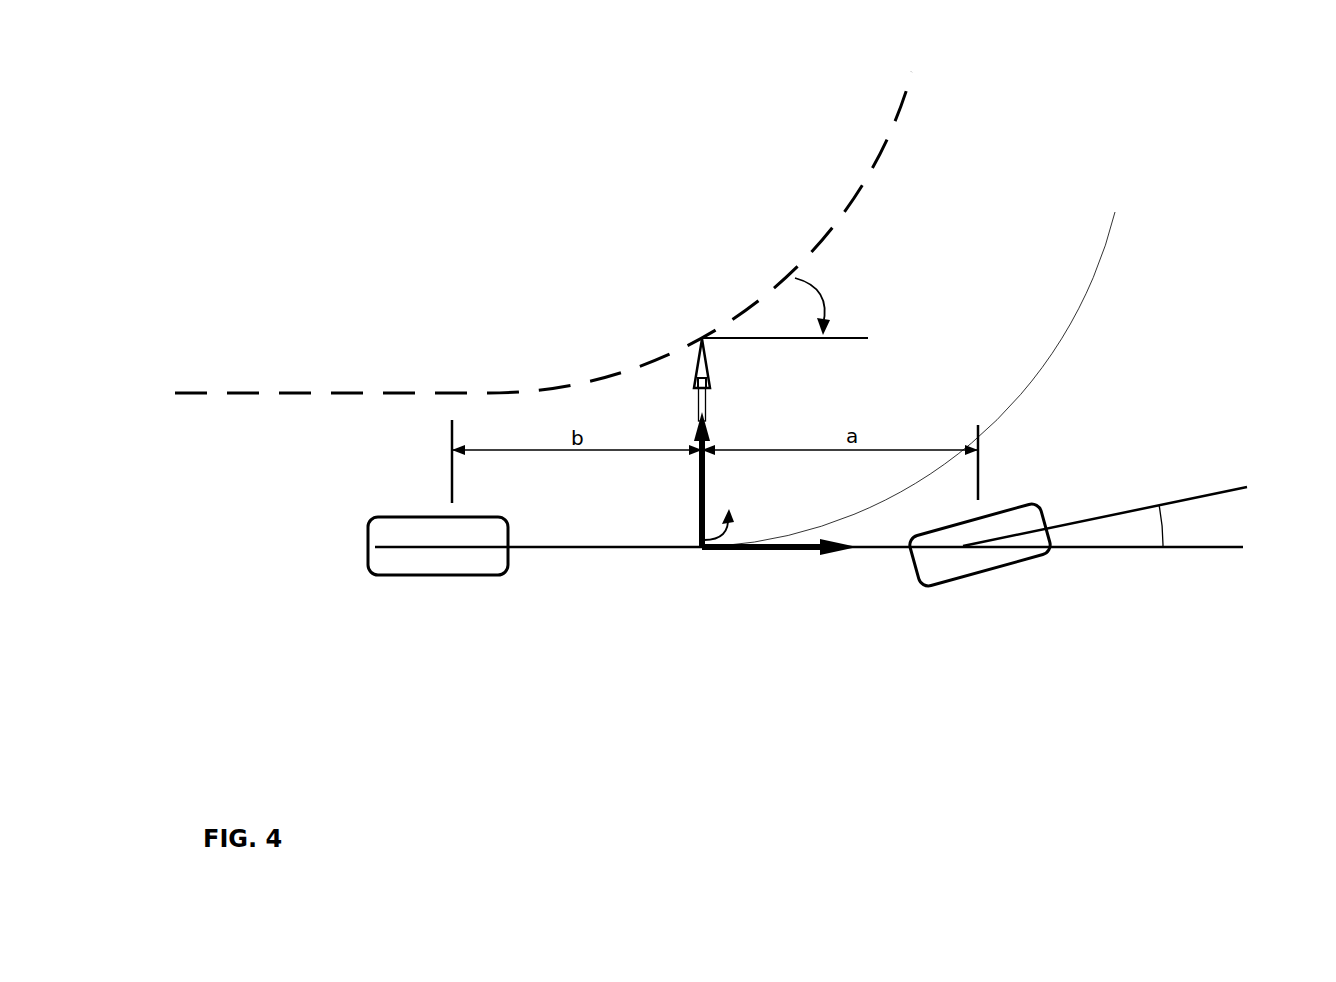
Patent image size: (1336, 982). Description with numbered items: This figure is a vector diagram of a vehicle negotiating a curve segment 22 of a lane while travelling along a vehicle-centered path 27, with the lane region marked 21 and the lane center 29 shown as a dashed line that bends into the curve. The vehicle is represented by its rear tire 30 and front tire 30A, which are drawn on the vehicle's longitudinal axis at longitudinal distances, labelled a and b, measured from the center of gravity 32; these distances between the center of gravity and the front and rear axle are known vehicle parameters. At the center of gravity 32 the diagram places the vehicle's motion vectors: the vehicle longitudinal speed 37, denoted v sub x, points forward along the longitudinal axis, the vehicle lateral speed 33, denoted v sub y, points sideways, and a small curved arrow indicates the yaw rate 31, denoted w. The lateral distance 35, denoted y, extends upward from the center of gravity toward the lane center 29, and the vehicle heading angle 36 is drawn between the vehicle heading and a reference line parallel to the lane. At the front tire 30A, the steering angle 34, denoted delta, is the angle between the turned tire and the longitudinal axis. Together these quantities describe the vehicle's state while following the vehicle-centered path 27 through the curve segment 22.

The first lane area 21 is at (274, 489).
The curve segment 22 is at (1061, 226).
The vehicle-centered path 27 is at (1058, 334).
The lane center 29 is at (305, 392).
The rear tire 30 is at (370, 565).
The front tire 30A is at (927, 587).
The yaw rate 31 is at (700, 541).
The center of gravity 32 is at (690, 557).
The vehicle lateral speed 33 is at (698, 473).
The steering angle 34 is at (1105, 516).
The lateral distance 35 is at (695, 388).
The vehicle heading angle 36 is at (785, 305).
The vehicle longitudinal speed 37 is at (757, 548).